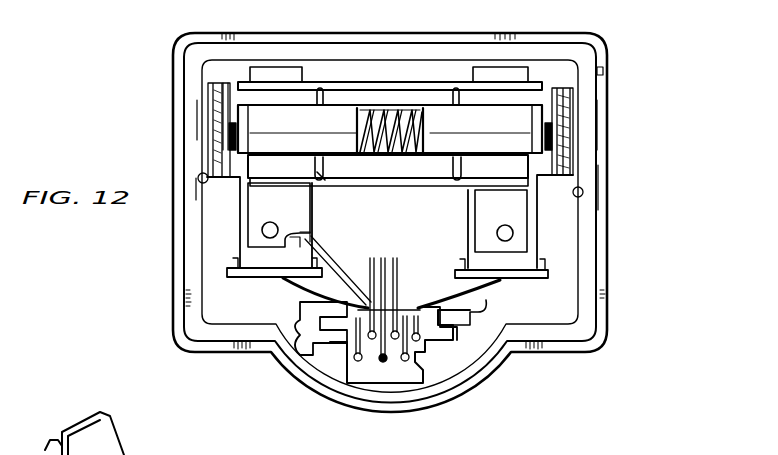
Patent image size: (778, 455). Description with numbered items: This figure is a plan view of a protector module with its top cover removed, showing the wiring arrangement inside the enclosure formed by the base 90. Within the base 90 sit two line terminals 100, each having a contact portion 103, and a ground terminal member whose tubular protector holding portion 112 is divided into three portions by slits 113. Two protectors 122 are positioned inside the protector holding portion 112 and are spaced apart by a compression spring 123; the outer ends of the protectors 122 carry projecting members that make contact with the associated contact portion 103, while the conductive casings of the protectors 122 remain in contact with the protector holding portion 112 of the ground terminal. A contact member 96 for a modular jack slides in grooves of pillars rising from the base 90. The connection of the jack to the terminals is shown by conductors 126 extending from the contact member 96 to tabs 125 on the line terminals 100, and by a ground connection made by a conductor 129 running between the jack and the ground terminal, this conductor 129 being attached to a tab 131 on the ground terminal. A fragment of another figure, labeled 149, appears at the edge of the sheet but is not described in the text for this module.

The base 90 is at (601, 173).
The contact member 96 is at (395, 378).
The line terminals 100 is at (242, 241).
The contact portion 103 is at (222, 137).
The protector holding portion 112 is at (404, 180).
The slits 113 is at (318, 90).
The protectors 122 is at (224, 100).
The compression spring 123 is at (403, 110).
The tabs 125 is at (272, 279).
The conductors 126 is at (312, 248).
The conductor 129 is at (362, 261).
The tab 131 is at (311, 235).
The fragment 149 is at (106, 441).